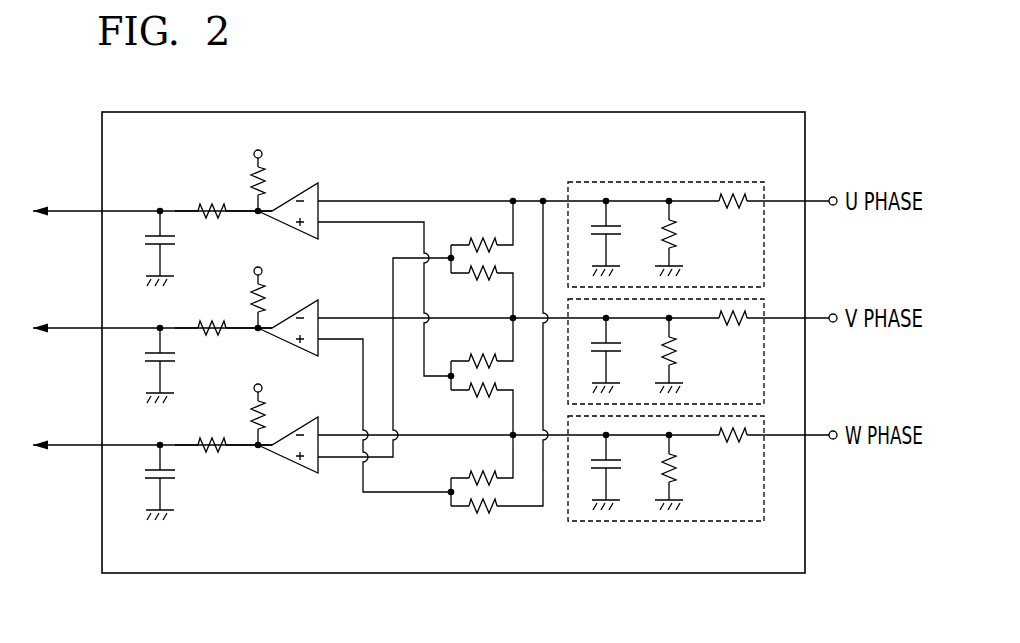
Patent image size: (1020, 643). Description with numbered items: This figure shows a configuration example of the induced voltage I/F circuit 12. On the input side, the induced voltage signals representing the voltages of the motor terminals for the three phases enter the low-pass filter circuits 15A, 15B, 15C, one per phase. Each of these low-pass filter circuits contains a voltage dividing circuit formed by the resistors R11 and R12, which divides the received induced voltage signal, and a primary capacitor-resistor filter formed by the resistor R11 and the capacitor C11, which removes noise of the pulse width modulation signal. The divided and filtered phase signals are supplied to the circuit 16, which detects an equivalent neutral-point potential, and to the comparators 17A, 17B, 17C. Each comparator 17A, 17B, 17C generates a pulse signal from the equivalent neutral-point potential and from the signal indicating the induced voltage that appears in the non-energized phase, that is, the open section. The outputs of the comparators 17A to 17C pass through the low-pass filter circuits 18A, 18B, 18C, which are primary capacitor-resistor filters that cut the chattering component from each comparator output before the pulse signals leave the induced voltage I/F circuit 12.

The induced voltage I/F circuit 12 is at (715, 112).
The low-pass filter circuit 15A is at (764, 262).
The low-pass filter circuit 15B is at (764, 379).
The low-pass filter circuit 15C is at (764, 494).
The circuit 16 is at (473, 200).
The comparator 17A is at (293, 188).
The comparator 17B is at (295, 306).
The comparator 17C is at (295, 423).
The low-pass filter circuit 18A is at (203, 207).
The low-pass filter circuit 18B is at (203, 323).
The low-pass filter circuit 18C is at (203, 438).
The capacitor C11 is at (619, 355).
The resistor R11 is at (732, 332).
The resistor R12 is at (685, 355).